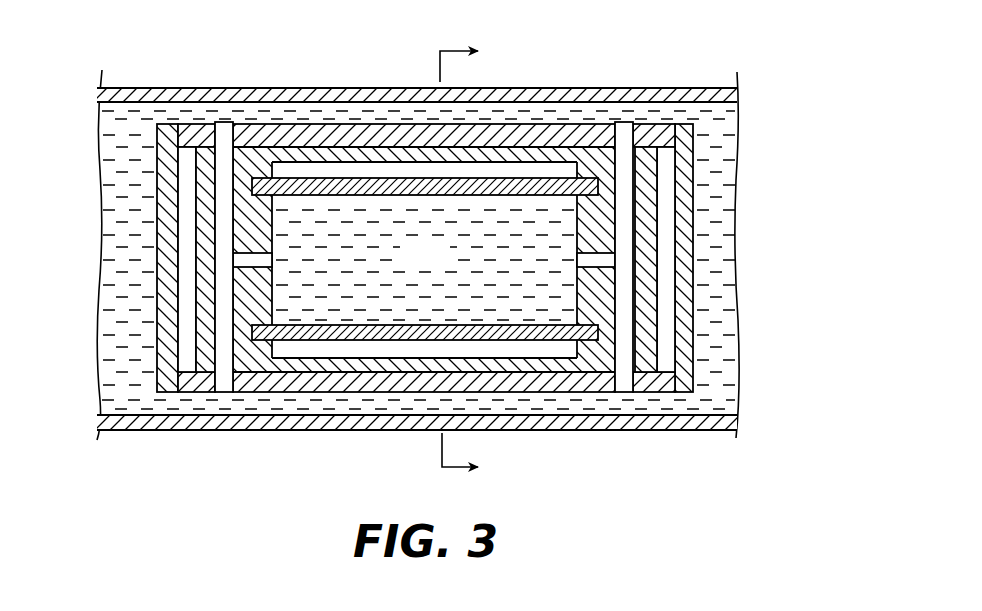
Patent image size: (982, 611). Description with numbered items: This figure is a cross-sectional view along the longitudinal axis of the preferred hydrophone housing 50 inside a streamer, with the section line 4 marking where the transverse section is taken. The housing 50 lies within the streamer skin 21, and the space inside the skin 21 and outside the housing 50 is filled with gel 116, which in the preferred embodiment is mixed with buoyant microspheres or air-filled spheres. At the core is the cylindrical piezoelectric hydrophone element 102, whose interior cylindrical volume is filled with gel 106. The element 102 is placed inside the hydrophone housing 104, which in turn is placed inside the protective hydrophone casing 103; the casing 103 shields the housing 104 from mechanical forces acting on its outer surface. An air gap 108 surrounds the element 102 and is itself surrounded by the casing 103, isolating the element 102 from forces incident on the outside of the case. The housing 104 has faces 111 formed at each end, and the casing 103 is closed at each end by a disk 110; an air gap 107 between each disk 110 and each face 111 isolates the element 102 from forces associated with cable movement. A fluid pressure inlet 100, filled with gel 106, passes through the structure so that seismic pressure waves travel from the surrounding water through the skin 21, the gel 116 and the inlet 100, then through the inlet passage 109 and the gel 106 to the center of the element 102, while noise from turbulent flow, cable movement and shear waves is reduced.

The hydrophone housing 50 is at (155, 60).
The streamer skin 21 is at (422, 86).
The fluid pressure inlet 100 is at (227, 124).
The cylindrical piezoelectric hydrophone element 102 is at (320, 185).
The protective hydrophone casing 103 is at (538, 122).
The hydrophone housing 104 is at (578, 149).
The gel 106 is at (447, 268).
The air gap 107 is at (664, 165).
The air gap 108 is at (330, 350).
The inlet passage 109 is at (604, 265).
The disk 110 is at (165, 233).
The face 111 is at (650, 351).
The gel 116 is at (669, 405).
The section line 4- 4 is at (472, 263).